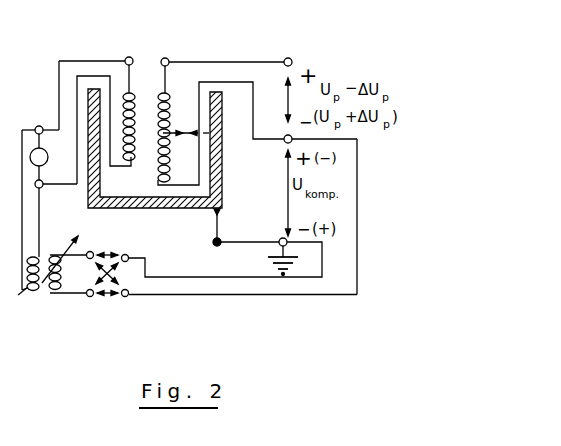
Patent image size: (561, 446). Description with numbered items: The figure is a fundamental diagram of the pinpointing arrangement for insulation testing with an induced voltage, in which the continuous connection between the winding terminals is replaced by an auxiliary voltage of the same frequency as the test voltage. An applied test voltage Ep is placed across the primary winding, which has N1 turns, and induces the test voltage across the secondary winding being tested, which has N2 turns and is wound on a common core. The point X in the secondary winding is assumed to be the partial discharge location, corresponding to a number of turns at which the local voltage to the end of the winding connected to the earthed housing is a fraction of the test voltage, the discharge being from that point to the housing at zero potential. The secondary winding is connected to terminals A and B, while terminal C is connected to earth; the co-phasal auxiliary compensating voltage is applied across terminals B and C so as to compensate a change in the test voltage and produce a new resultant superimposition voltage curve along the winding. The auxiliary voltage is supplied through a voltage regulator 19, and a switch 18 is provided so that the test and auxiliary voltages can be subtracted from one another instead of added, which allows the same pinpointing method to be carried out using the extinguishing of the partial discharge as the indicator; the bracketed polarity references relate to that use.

The switch 18 is at (120, 252).
The voltage regulator 19 is at (43, 253).
The primary winding turns N1 is at (138, 109).
The secondary winding turns N2 is at (170, 165).
The terminal A is at (226, 54).
The terminal B is at (312, 148).
The terminal C is at (283, 247).
The partial discharge location X is at (190, 145).
The applied test voltage Ep is at (54, 150).